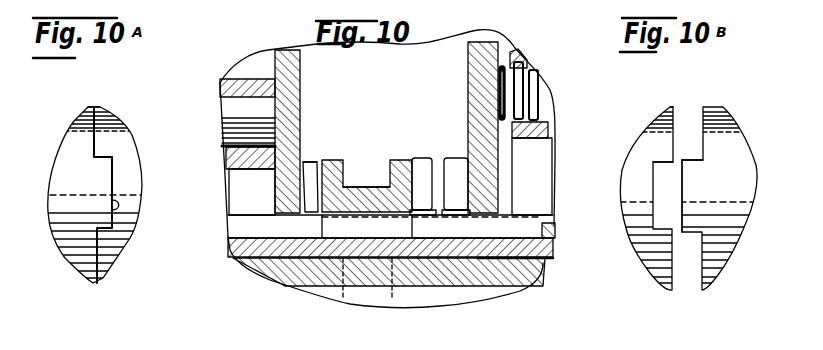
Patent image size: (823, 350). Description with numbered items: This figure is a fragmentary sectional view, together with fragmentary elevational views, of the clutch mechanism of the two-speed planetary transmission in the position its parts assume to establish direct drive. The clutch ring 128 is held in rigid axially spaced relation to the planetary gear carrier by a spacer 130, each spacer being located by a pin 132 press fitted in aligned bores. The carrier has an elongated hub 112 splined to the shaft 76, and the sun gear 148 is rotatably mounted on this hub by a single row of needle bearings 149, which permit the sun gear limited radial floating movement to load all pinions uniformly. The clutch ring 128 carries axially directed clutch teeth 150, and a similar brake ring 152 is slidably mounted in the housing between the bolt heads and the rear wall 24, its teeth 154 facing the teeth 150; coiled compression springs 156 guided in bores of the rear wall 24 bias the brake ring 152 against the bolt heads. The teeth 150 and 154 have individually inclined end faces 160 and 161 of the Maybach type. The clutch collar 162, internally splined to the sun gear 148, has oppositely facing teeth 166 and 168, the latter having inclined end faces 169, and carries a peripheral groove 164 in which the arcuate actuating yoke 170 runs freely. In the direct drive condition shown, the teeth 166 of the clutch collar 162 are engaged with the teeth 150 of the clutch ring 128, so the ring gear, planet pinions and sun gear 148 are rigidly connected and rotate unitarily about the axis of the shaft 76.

In FIG. 10, the rear wall 24 is at (545, 129).
In FIG. 10, the shaft 76 is at (343, 302).
In FIG. 10, the elongated hub 112 is at (531, 282).
In FIG. 10, the clutch ring 128 is at (300, 78).
In FIG. 10A, the clutch ring 128 is at (60, 243).
In FIG. 10, the spacer 130 is at (221, 83).
In FIG. 10, the pin 132 is at (222, 120).
In FIG. 10, the sun gear 148 is at (556, 242).
In FIG. 10, the needle bearings 149 is at (548, 259).
In FIG. 10, the clutch teeth 150 is at (310, 158).
In FIG. 10A, the clutch teeth 150 is at (100, 172).
In FIG. 10, the brake ring 152 is at (470, 74).
In FIG. 10B, the brake ring 152 is at (720, 118).
In FIG. 10, the teeth 154 is at (451, 158).
In FIG. 10B, the teeth 154 is at (697, 143).
In FIG. 10, the coiled compression springs 156 is at (520, 85).
In FIG. 10A, the inclined end faces 160 is at (110, 207).
In FIG. 10, the inclined end faces 161 is at (447, 207).
In FIG. 10B, the inclined end faces 161 is at (683, 183).
In FIG. 10, the clutch collar 162 is at (358, 159).
In FIG. 10A, the clutch collar 162 is at (135, 198).
In FIG. 10B, the clutch collar 162 is at (625, 182).
In FIG. 10, the peripheral groove 164 is at (388, 171).
In FIG. 10, the teeth 166 is at (314, 158).
In FIG. 10A, the teeth 166 is at (100, 143).
In FIG. 10, the teeth 168 is at (423, 147).
In FIG. 10B, the teeth 168 is at (673, 108).
In FIG. 10, the inclined end faces 169 is at (435, 206).
In FIG. 10B, the inclined end faces 169 is at (672, 154).
In FIG. 10, the arcuate actuating yoke 170 is at (394, 303).